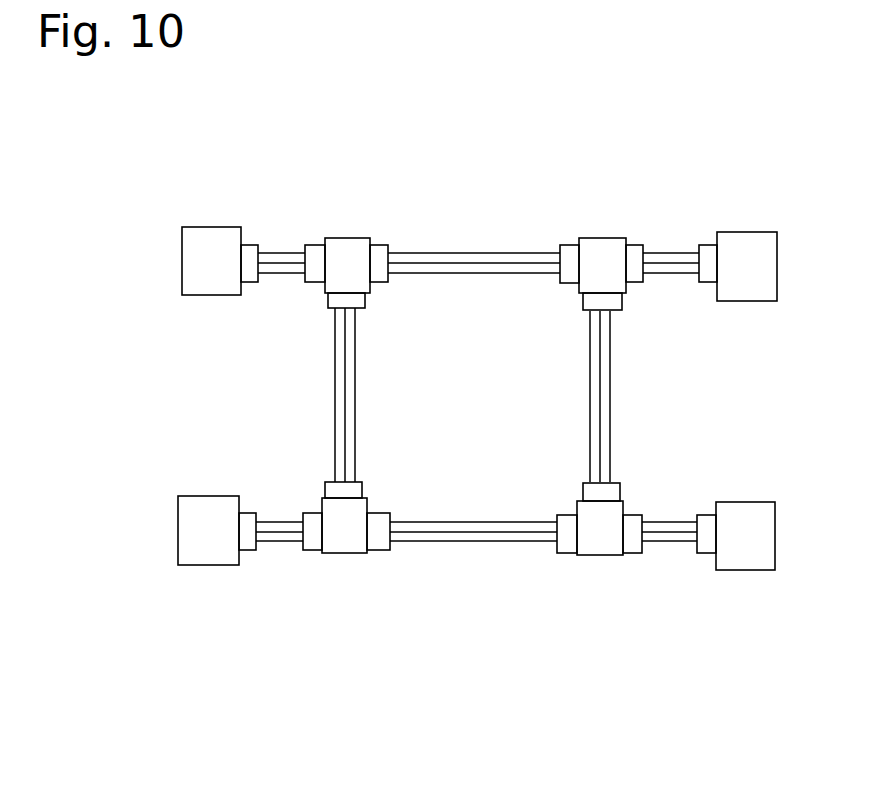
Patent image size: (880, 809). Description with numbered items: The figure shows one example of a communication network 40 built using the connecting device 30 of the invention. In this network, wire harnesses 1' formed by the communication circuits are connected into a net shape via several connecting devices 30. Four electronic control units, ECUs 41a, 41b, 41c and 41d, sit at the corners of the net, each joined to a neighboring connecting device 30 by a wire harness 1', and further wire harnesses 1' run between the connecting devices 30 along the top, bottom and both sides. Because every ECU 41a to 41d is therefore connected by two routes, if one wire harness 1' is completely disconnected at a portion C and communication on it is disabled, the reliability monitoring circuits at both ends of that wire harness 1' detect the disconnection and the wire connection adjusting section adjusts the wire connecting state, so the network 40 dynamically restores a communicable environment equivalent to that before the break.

The communication network 40 is at (548, 627).
The ECU 41a is at (220, 227).
The ECU 41b is at (742, 232).
The ECU 41c is at (205, 496).
The ECU 41d is at (737, 502).
The connecting device 30 is at (343, 238).
The wire harness 1' is at (496, 396).
The portion C is at (382, 408).